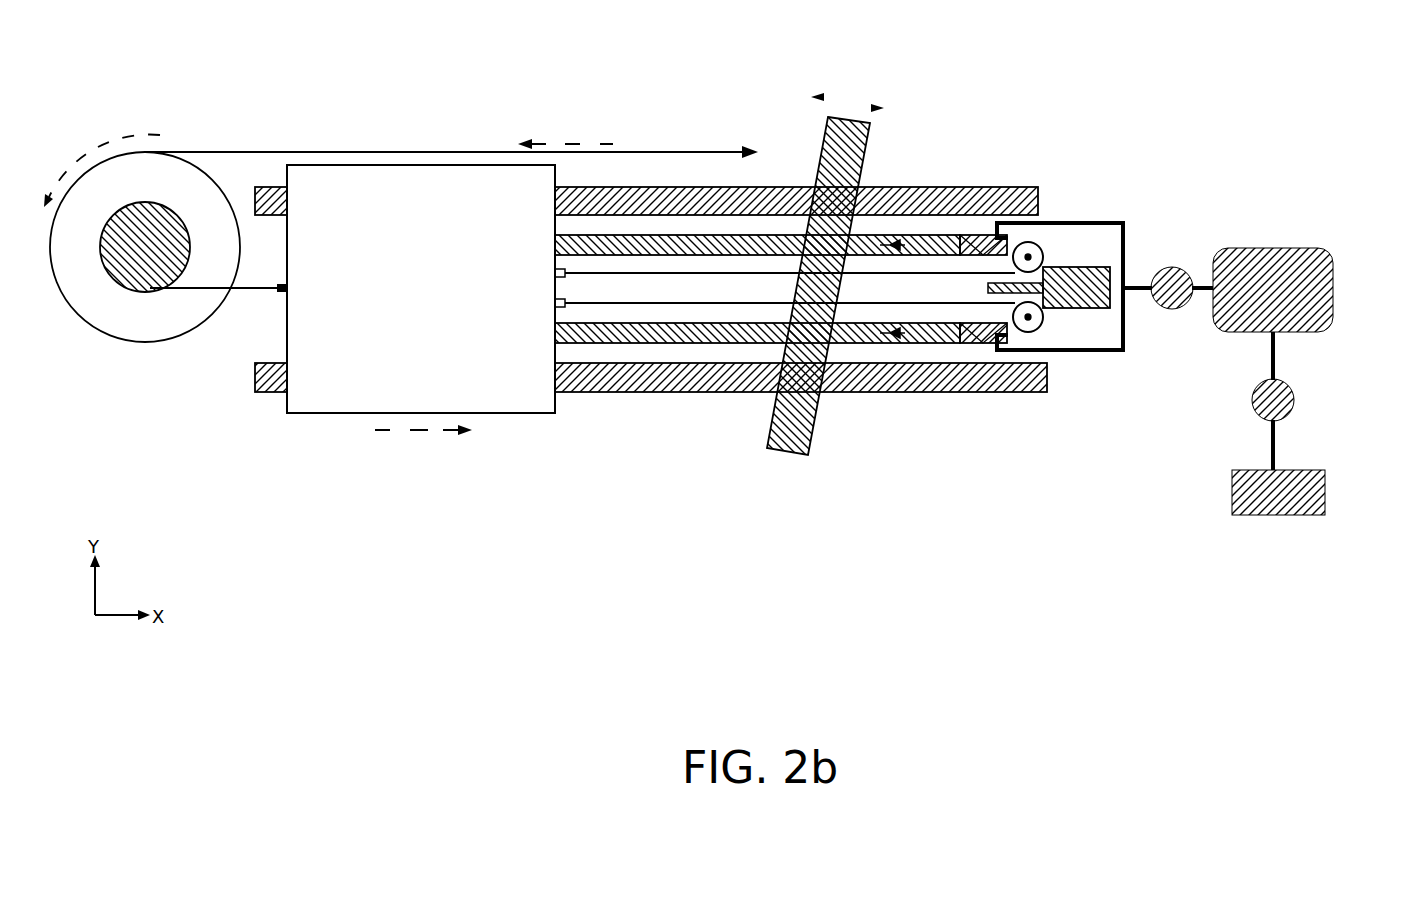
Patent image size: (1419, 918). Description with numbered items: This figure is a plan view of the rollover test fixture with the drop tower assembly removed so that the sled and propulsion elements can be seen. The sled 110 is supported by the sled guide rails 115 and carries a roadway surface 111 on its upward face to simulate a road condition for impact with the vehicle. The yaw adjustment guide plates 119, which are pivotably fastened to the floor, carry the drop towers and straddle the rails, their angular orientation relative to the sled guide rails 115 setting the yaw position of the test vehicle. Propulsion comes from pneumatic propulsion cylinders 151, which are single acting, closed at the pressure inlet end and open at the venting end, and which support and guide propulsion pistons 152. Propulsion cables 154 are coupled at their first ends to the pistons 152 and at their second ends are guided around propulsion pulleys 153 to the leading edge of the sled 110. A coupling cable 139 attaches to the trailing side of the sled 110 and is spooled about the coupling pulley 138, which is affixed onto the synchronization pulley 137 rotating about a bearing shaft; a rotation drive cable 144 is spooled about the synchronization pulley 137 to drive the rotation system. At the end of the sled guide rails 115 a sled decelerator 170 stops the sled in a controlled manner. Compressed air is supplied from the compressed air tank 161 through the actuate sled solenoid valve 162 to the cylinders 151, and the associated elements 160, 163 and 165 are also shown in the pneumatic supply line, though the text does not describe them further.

The sled 110 is at (415, 297).
The roadway surface 111 is at (433, 200).
The sled guide rails 115 is at (958, 187).
The yaw adjustment guide plates 119 is at (780, 455).
The synchronization pulley 137 is at (167, 203).
The coupling pulley 138 is at (118, 168).
The coupling cable 139 is at (257, 295).
The rotation drive cable 144 is at (658, 151).
The propulsion cylinders 151 is at (915, 235).
The propulsion pistons 152 is at (987, 235).
The propulsion pulleys 153 is at (1025, 242).
The propulsion cables 154 is at (697, 305).
The base 160 is at (1250, 505).
The compressed air tank 161 is at (1240, 250).
The actuate sled solenoid valve 162 is at (1178, 300).
The coupling 163 is at (1295, 392).
The bracket 165 is at (1110, 223).
The sled decelerator 170 is at (1103, 310).